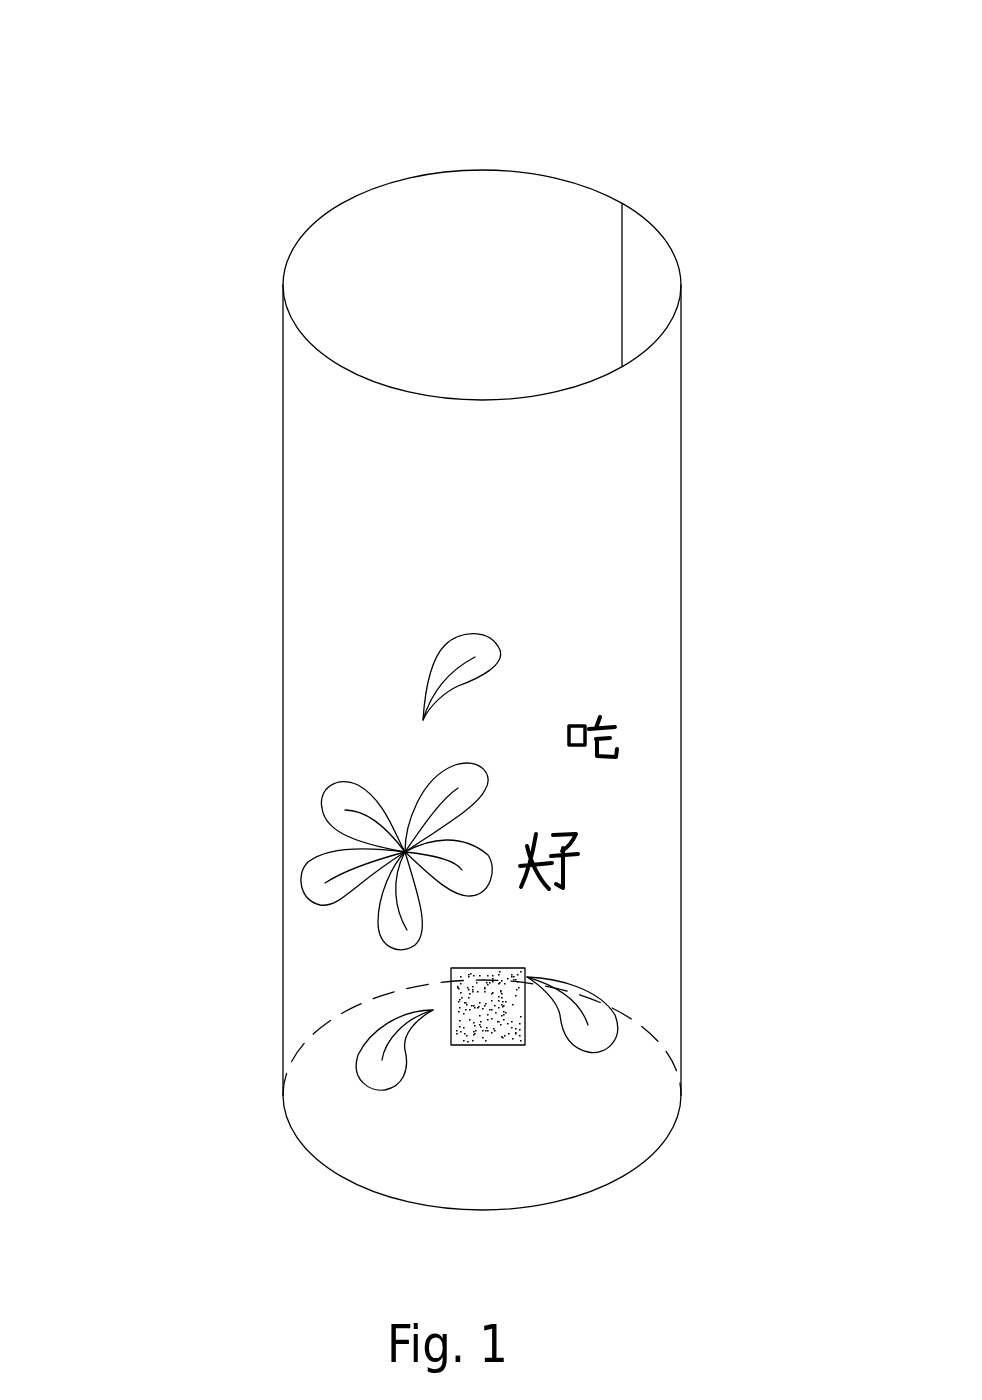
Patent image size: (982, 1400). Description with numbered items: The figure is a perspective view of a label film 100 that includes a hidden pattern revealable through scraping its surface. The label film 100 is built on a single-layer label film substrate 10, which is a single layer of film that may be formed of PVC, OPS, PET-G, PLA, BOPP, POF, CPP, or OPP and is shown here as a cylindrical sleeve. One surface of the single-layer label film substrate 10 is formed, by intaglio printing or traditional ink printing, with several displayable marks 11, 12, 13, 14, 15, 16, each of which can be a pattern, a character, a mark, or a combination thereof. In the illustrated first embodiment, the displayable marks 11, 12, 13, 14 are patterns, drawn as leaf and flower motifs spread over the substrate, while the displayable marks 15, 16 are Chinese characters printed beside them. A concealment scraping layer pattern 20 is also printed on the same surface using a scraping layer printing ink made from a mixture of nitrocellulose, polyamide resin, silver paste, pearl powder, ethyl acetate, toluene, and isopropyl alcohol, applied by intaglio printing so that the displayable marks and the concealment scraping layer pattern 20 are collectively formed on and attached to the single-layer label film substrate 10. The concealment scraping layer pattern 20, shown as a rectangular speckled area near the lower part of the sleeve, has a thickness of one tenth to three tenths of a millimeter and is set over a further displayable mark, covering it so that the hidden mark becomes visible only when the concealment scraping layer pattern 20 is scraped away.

The label film 100 is at (252, 170).
The single-layer label film substrate 10 is at (680, 562).
The displayable mark 11 is at (450, 663).
The displayable mark 12 is at (340, 822).
The displayable mark 13 is at (375, 1072).
The displayable mark 14 is at (588, 992).
The displayable mark 15 is at (597, 717).
The displayable mark 16 is at (568, 843).
The concealment scraping layer pattern 20 is at (503, 1023).